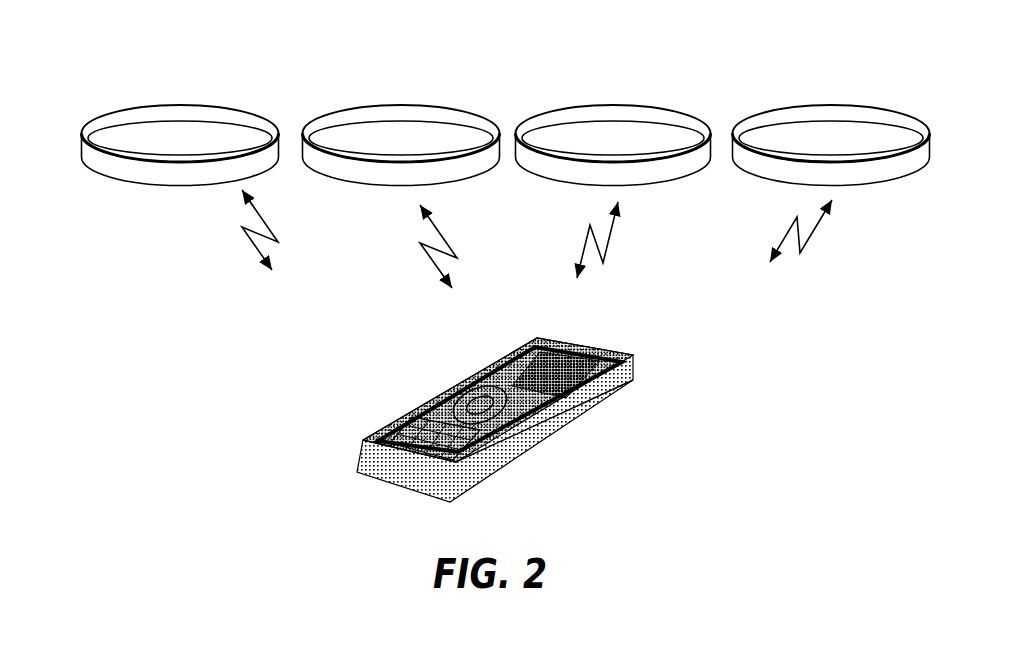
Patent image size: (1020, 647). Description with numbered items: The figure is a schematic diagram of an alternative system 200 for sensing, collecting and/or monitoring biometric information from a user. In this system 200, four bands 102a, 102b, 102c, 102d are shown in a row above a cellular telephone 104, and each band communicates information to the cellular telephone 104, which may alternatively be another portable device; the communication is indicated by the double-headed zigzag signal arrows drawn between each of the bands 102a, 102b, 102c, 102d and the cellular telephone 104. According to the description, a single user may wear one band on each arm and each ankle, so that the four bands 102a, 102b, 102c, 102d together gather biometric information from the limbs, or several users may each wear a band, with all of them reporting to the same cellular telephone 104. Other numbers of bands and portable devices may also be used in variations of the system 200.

The alternative system 200 is at (722, 70).
The band 102a is at (127, 167).
The band 102b is at (333, 168).
The band 102c is at (550, 167).
The band 102d is at (900, 178).
The cellular telephone 104 is at (582, 402).